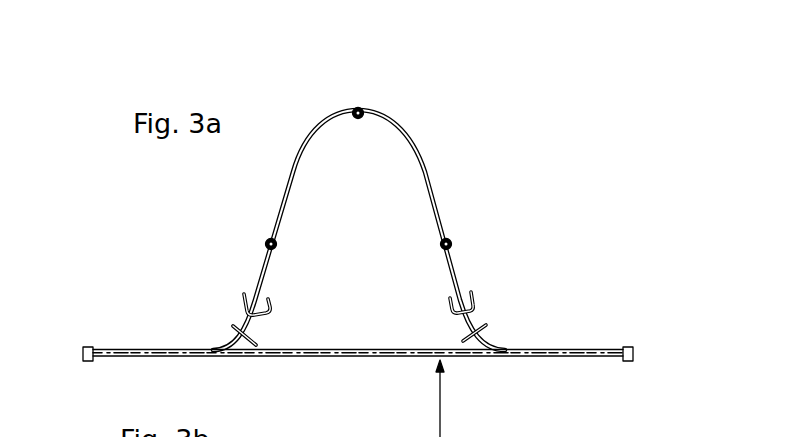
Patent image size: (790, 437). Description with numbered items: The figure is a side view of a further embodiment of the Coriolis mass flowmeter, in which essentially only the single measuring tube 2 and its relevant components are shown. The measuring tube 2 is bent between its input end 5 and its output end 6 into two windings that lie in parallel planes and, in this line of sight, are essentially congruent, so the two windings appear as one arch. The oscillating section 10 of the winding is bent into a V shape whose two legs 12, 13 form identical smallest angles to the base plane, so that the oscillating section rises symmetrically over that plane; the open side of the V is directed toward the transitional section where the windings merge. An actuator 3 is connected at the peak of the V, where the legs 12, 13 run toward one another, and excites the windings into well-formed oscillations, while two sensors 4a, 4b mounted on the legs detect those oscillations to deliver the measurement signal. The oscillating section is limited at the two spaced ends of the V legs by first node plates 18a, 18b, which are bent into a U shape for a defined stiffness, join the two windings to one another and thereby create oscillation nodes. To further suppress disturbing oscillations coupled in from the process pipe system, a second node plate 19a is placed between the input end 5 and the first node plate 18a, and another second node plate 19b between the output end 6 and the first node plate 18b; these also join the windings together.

The measuring tube 2 is at (432, 180).
The actuator 3 is at (361, 109).
The sensor 4a is at (266, 242).
The sensor 4b is at (452, 244).
The input end 5 is at (85, 361).
The output end 6 is at (632, 361).
The oscillating section 10 is at (605, 97).
The leg 12 is at (325, 145).
The leg 13 is at (390, 145).
The first node plate 18a is at (243, 298).
The first node plate 18b is at (476, 302).
The second node plate 19a is at (236, 330).
The second node plate 19b is at (487, 328).